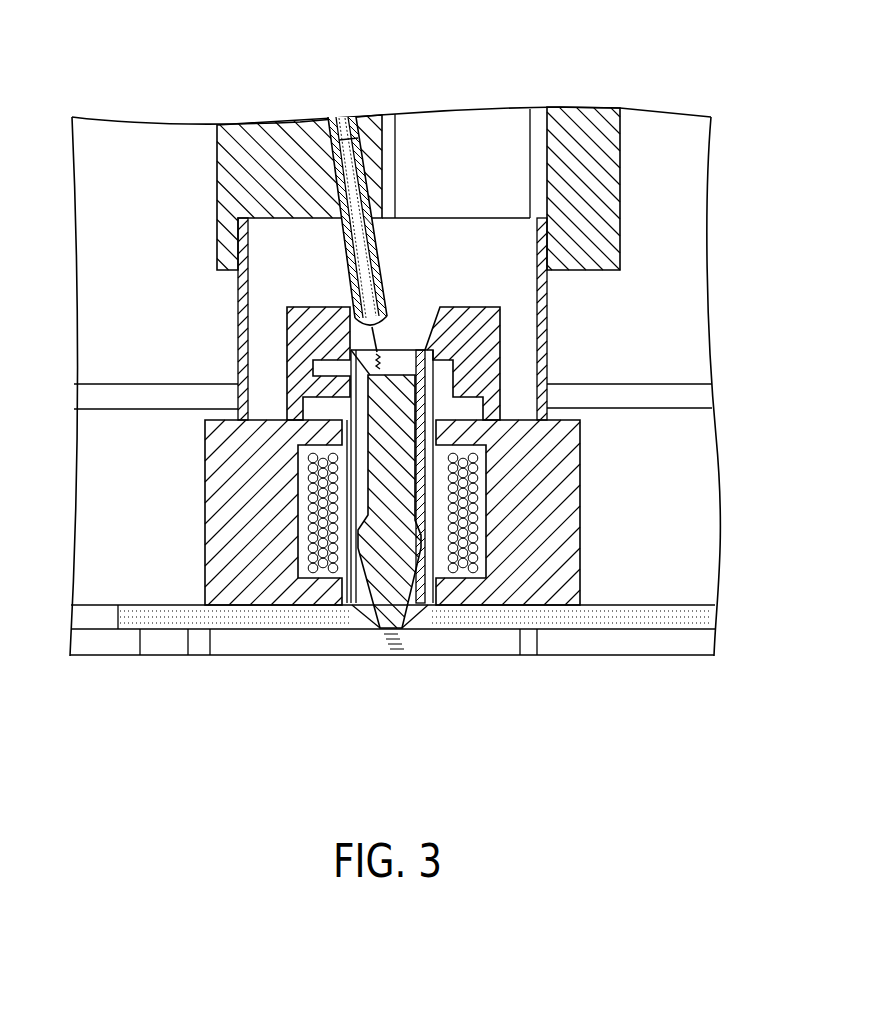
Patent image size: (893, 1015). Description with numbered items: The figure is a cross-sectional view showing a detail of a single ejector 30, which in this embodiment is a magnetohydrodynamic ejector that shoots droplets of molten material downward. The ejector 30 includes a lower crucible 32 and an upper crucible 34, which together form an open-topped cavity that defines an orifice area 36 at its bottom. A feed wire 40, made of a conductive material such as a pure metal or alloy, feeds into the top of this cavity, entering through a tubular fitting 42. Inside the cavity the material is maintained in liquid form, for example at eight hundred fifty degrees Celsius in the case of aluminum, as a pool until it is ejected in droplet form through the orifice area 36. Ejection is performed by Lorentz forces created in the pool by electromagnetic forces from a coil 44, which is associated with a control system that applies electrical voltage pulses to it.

The ejector 30 is at (686, 97).
The lower crucible 32 is at (430, 600).
The upper crucible 34 is at (433, 524).
The orifice area 36 is at (389, 632).
The feed wire 40 is at (357, 137).
The tubular fitting 42 is at (333, 175).
The coil 44 is at (472, 474).